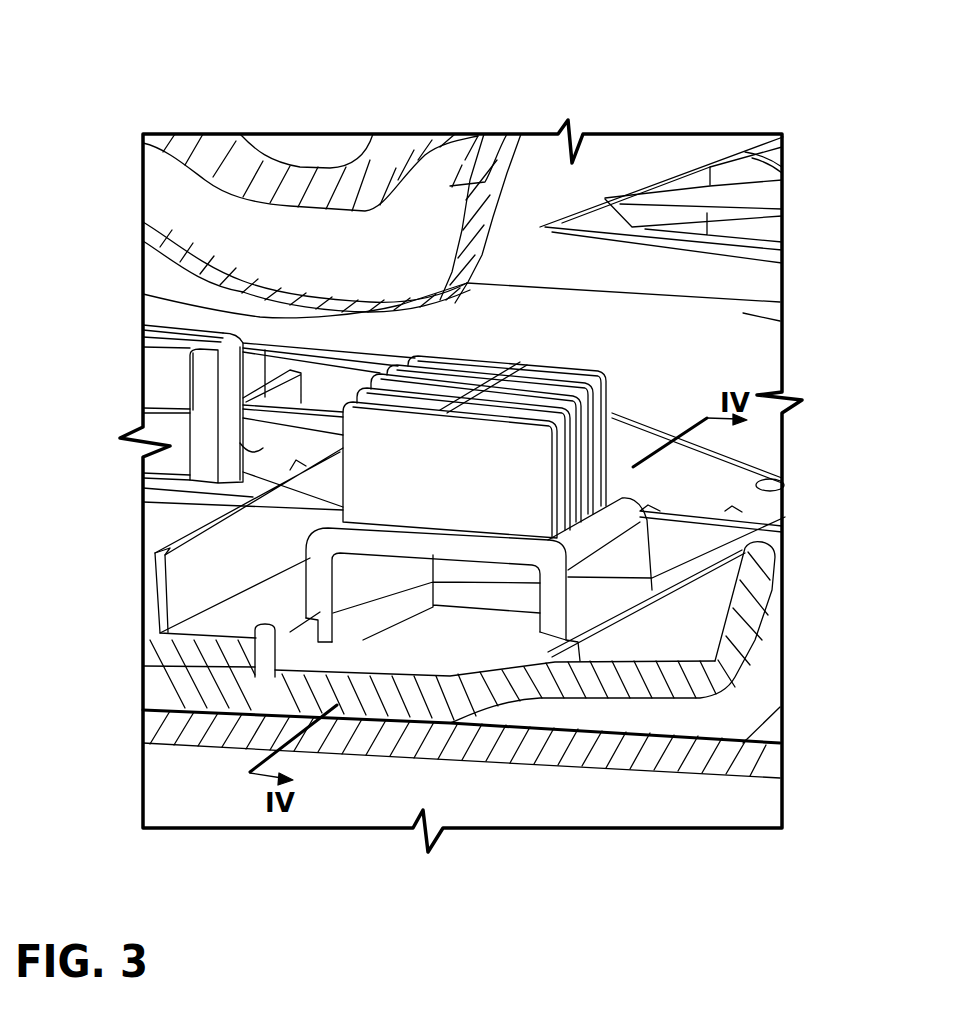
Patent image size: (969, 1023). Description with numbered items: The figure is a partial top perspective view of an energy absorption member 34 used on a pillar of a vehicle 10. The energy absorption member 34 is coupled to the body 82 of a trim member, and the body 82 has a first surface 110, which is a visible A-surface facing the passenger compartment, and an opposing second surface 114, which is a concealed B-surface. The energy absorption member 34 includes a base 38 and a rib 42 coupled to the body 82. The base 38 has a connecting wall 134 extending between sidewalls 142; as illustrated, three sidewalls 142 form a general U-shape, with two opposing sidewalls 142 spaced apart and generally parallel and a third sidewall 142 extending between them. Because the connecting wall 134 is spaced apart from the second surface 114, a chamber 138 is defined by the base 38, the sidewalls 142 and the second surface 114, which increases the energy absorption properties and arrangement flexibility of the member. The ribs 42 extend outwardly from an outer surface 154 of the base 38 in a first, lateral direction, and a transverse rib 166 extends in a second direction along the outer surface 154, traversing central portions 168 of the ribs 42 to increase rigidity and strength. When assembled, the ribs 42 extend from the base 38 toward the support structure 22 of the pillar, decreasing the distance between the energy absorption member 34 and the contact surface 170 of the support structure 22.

The vehicle 10 is at (678, 103).
The support structure 22 is at (183, 201).
The contact surface 170 is at (193, 279).
The transverse rib 166 is at (497, 375).
The central portions 168 is at (440, 417).
The sidewalls 142 is at (463, 565).
The connecting wall 134 is at (490, 553).
The chamber 138 is at (440, 622).
The base 38 is at (595, 593).
The rib 42 is at (540, 485).
The outer surface 154 is at (700, 495).
The energy absorption member 34 is at (768, 590).
The second surface 114 is at (330, 664).
The body 82 is at (627, 717).
The first surface 110 is at (193, 748).